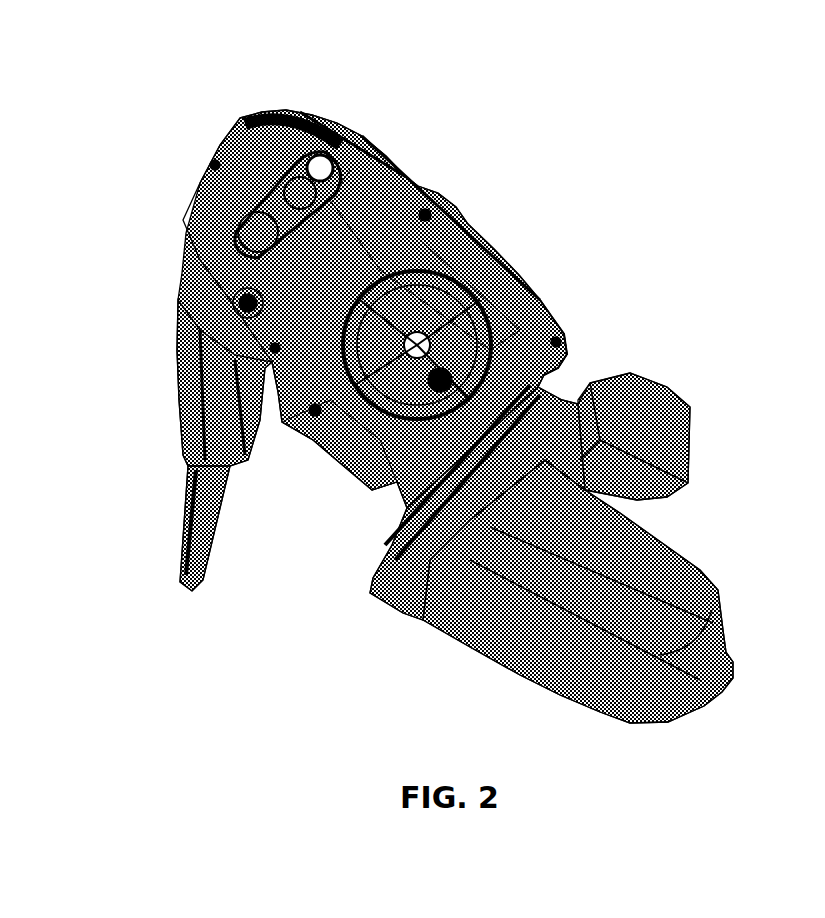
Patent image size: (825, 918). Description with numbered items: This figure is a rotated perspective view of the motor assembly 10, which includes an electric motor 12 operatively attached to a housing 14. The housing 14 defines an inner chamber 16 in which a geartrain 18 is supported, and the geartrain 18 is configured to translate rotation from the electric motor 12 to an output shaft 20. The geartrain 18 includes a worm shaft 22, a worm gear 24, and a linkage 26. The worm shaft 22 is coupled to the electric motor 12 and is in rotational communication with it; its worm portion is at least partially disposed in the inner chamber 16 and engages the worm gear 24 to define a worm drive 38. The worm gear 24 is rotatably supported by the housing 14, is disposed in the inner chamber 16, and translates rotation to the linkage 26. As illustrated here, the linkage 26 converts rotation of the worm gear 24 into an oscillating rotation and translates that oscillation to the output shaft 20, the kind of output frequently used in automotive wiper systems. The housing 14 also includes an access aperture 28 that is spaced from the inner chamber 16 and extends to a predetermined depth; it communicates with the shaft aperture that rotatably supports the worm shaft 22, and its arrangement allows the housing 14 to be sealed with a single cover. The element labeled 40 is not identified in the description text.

The motor assembly 10 is at (643, 207).
The electric motor 12 is at (687, 560).
The housing 14 is at (455, 217).
The inner chamber 16 is at (517, 267).
The geartrain 18 is at (382, 150).
The output shaft 20 is at (220, 540).
The worm shaft 22 is at (278, 423).
The worm gear 24 is at (477, 248).
The linkage 26 is at (305, 130).
The access aperture 28 is at (180, 297).
The worm drive 38 is at (330, 447).
The bearing opening 40 is at (178, 257).